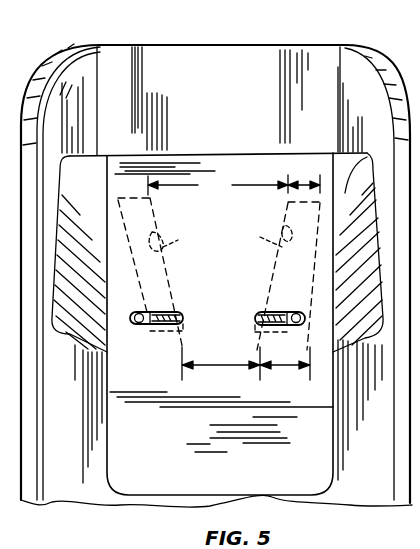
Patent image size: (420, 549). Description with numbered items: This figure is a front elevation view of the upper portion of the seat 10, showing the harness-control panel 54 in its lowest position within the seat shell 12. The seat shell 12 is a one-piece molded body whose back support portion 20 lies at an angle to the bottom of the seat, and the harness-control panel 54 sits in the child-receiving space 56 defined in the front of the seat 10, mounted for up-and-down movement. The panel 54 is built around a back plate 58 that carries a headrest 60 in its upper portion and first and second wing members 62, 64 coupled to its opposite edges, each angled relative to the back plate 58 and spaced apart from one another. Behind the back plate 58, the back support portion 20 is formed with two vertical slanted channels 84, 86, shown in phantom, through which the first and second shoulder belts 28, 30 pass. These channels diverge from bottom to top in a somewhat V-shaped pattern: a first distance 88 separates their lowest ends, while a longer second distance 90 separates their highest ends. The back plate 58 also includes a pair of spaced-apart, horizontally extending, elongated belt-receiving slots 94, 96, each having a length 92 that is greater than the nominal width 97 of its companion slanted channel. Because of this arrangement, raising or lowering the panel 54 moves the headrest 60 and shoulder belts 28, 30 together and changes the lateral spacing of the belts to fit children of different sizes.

The seat 10 is at (34, 70).
The seat shell 12 is at (388, 60).
The back support portion 20 is at (225, 60).
The child-receiving space 56 is at (120, 65).
The harness-control panel 54 is at (252, 138).
The headrest 60 is at (206, 155).
The second wing member 64 is at (87, 173).
The first wing member 62 is at (365, 157).
The back plate 58 is at (128, 449).
The second distance 90 is at (218, 186).
The nominal width 97 is at (308, 176).
The second slanted channel 86 is at (157, 274).
The first slanted channel 84 is at (278, 276).
The second shoulder belt 30 is at (160, 316).
The belt-receiving slot 96 is at (143, 327).
The first shoulder belt 28 is at (272, 317).
The belt-receiving slot 94 is at (297, 315).
The first distance 88 is at (223, 366).
The length 92 is at (283, 367).